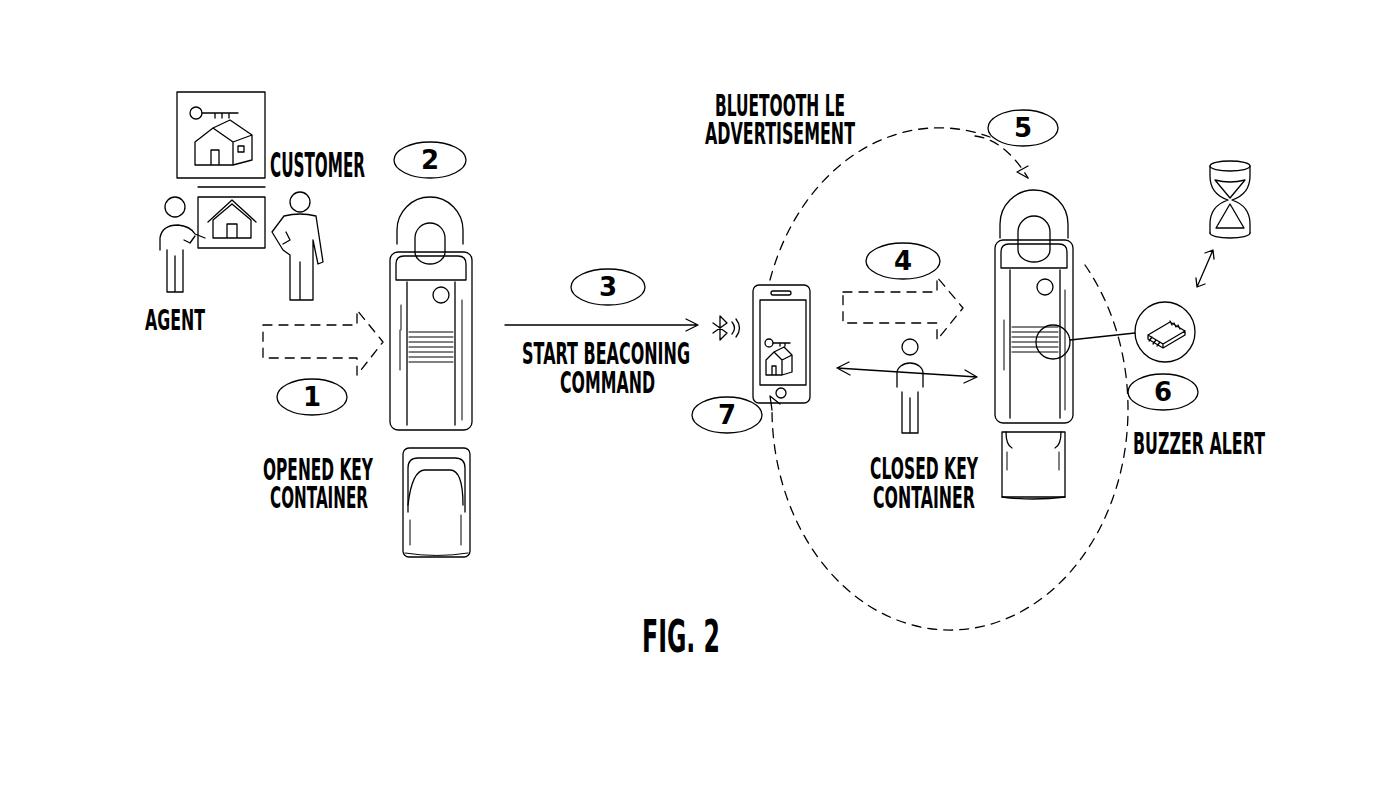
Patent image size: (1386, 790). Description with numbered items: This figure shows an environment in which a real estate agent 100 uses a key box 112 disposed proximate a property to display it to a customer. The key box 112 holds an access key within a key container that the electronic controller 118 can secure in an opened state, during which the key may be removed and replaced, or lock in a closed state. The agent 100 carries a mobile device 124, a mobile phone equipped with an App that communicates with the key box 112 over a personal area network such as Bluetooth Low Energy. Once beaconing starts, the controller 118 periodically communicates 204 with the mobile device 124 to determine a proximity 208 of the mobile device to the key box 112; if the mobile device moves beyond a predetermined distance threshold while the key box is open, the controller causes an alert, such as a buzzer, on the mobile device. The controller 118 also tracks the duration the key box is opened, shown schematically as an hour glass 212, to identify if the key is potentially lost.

The real estate agent 100 is at (905, 343).
The key box 112 is at (1066, 275).
The electronic controller 118 is at (1193, 347).
The mobile device 124 is at (757, 290).
The periodic communication 204 is at (885, 562).
The proximity 208 is at (872, 373).
The hour glass 212 is at (1237, 198).